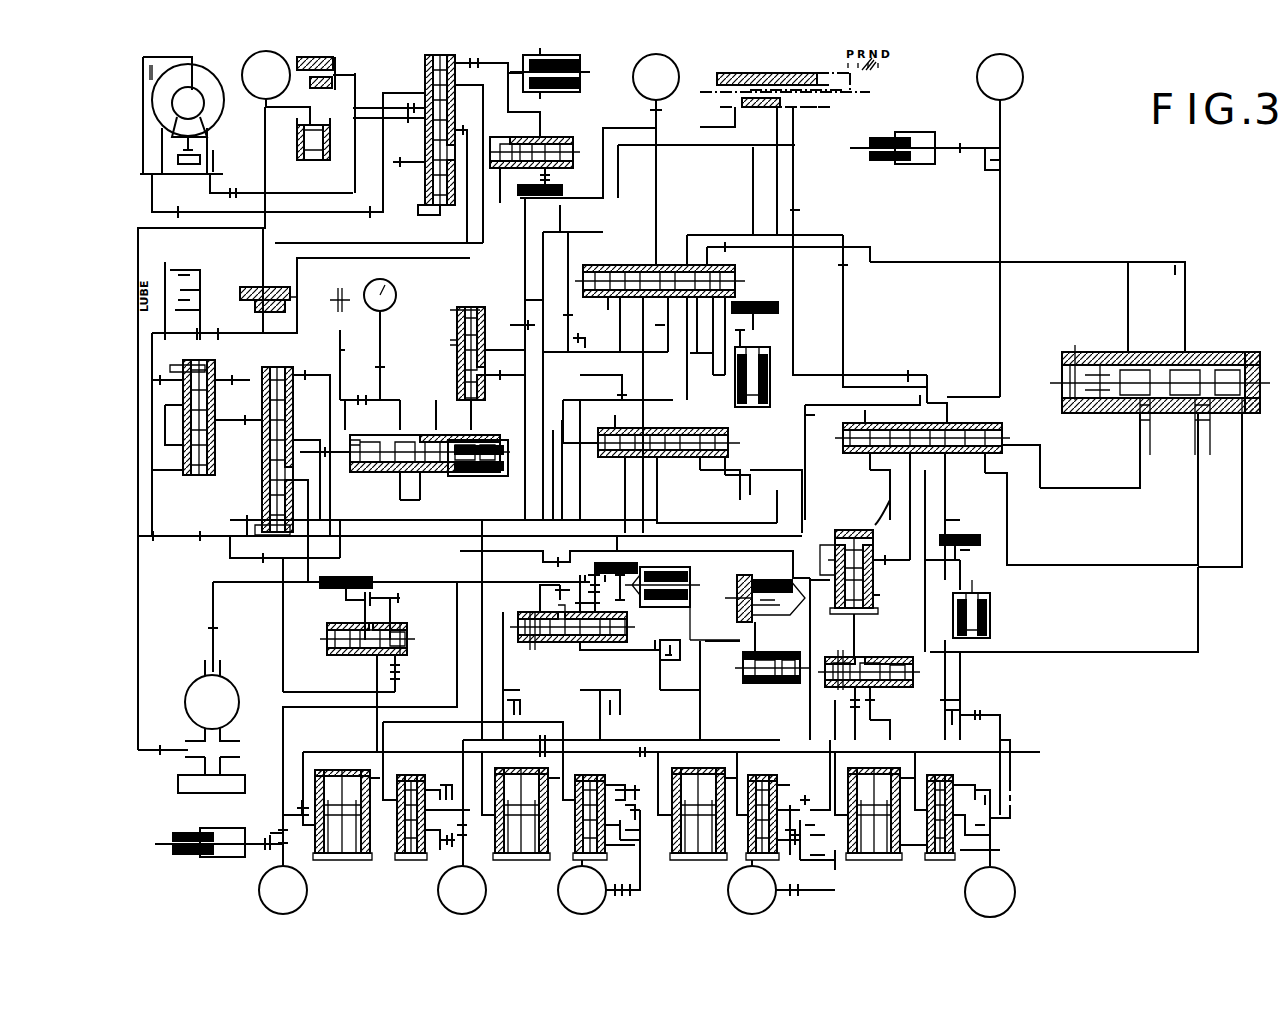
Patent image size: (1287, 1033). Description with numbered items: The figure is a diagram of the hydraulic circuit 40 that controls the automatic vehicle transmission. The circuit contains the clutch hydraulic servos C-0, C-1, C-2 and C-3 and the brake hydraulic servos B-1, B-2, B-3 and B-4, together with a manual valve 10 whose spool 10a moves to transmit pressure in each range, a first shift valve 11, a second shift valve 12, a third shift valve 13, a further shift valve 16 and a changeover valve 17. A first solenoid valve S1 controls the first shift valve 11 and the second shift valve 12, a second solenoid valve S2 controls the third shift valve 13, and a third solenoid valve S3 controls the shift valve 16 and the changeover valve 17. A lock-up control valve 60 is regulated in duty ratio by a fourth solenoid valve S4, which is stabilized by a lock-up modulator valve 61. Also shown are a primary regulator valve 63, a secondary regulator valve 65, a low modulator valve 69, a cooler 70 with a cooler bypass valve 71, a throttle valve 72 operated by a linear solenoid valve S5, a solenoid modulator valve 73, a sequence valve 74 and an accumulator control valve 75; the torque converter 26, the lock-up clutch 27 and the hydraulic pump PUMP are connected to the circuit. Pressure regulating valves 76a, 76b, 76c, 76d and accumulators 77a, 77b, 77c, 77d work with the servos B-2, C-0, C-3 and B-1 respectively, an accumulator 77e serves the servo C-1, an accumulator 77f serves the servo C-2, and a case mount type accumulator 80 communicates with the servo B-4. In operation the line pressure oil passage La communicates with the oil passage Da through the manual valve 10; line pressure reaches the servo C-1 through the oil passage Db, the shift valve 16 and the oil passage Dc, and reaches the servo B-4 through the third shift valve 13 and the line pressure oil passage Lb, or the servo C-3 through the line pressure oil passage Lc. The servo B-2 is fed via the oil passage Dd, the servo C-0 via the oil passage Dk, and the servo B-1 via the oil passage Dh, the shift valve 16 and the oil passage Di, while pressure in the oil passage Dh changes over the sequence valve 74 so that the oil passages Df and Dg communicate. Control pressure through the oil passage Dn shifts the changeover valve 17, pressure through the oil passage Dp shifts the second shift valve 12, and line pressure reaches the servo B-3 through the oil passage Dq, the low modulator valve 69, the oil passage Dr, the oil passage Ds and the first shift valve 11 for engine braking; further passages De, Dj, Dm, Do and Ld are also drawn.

The manual valve 10 is at (773, 73).
The spool 10a is at (868, 120).
The 1-2 shift valve 11 is at (620, 265).
The 3-4 shift valve 12 is at (730, 440).
The 2-3 shift valve 13 is at (540, 650).
The 4-5 shift valve 16 is at (1000, 435).
The B3 changeover valve 17 is at (1205, 352).
The torque converter 26 is at (203, 85).
The lock-up clutch 27 is at (143, 88).
The hydraulic circuit 40 is at (1217, 637).
The lock-up control valve 60 is at (422, 205).
The lock-up modulator valve 61 is at (500, 203).
The primary regulator valve 63 is at (290, 372).
The secondary regulator valve 65 is at (208, 372).
The low modulator valve 69 is at (850, 615).
The cooler 70 is at (258, 100).
The cooler bypass valve 71 is at (322, 155).
The throttle valve 72 is at (417, 472).
The solenoid modulator valve 73 is at (476, 310).
The B1 sequence valve 74 is at (903, 690).
The accumulator control valve 75 is at (408, 635).
The pressure regulating valve 76a is at (408, 860).
The pressure regulating valve 76b is at (615, 875).
The pressure regulating valve 76c is at (800, 875).
The pressure regulating valve 76d is at (943, 860).
The accumulator 77a is at (336, 860).
The accumulator 77b is at (520, 860).
The accumulator 77c is at (705, 860).
The accumulator 77d is at (876, 860).
The accumulator 77e is at (905, 165).
The accumulator 77f is at (200, 858).
The case mount type accumulator 80 is at (772, 683).
The first solenoid valve S1 is at (772, 345).
The second solenoid valve S2 is at (668, 608).
The third solenoid valve S3 is at (992, 620).
The fourth solenoid valve S4 is at (583, 82).
The linear solenoid valve S5 is at (465, 476).
The first brake hydraulic servo B-1 is at (990, 892).
The second brake hydraulic servo B-2 is at (462, 862).
The third brake hydraulic servo B-3 is at (656, 159).
The fourth brake hydraulic servo B-4 is at (765, 610).
The third clutch hydraulic servo C-0 is at (599, 877).
The first clutch hydraulic servo C-1 is at (991, 225).
The second clutch hydraulic servo C-2 is at (283, 857).
The fourth clutch hydraulic servo C-3 is at (781, 887).
The hydraulic pump PUMP is at (191, 726).
The oil passage Da is at (802, 150).
The oil passage Db is at (780, 468).
The oil passage Dc is at (1002, 330).
The oil passage Dd is at (455, 645).
The oil passage De is at (752, 740).
The oil passage Df is at (812, 620).
The oil passage Dg is at (888, 492).
The oil passage Dh is at (797, 285).
The oil passage Di is at (926, 605).
The oil passage Dj is at (682, 348).
The oil passage Dk is at (512, 690).
The oil passage Dm is at (846, 320).
The oil passage Dn is at (1118, 565).
The oil passage Do is at (1065, 270).
The oil passage Dp is at (1077, 488).
The oil passage Dq is at (1087, 652).
The oil passage Dr is at (660, 498).
The oil passage Ds is at (638, 372).
The line pressure oil passage La is at (422, 582).
The line pressure oil passage Lb is at (636, 670).
The line pressure oil passage Lc is at (672, 730).
The oil passage Ld is at (578, 485).